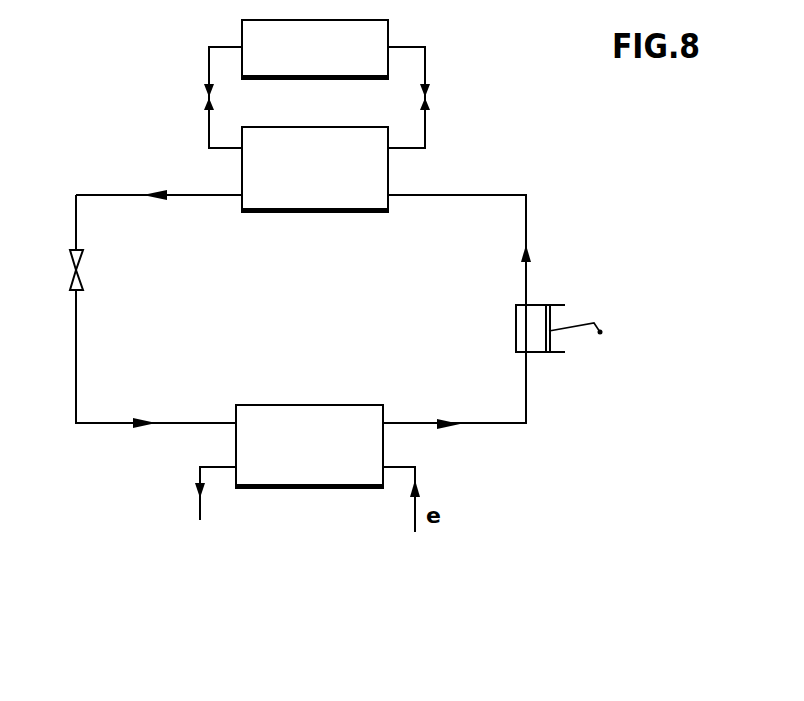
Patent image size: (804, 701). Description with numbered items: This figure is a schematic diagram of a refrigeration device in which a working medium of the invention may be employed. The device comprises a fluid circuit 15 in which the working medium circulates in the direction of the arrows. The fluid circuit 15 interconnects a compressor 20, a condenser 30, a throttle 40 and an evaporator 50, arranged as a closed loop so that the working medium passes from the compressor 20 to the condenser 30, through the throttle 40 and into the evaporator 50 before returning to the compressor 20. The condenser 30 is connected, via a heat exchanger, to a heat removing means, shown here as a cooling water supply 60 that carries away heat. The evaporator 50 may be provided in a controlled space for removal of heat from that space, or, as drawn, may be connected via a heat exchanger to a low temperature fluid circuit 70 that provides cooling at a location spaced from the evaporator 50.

The fluid circuit 15 is at (475, 195).
The compressor 20 is at (533, 311).
The condenser 30 is at (385, 178).
The throttle 40 is at (72, 288).
The evaporator 50 is at (308, 415).
The cooling water supply 60 is at (380, 38).
The low temperature fluid circuit 70 is at (195, 468).